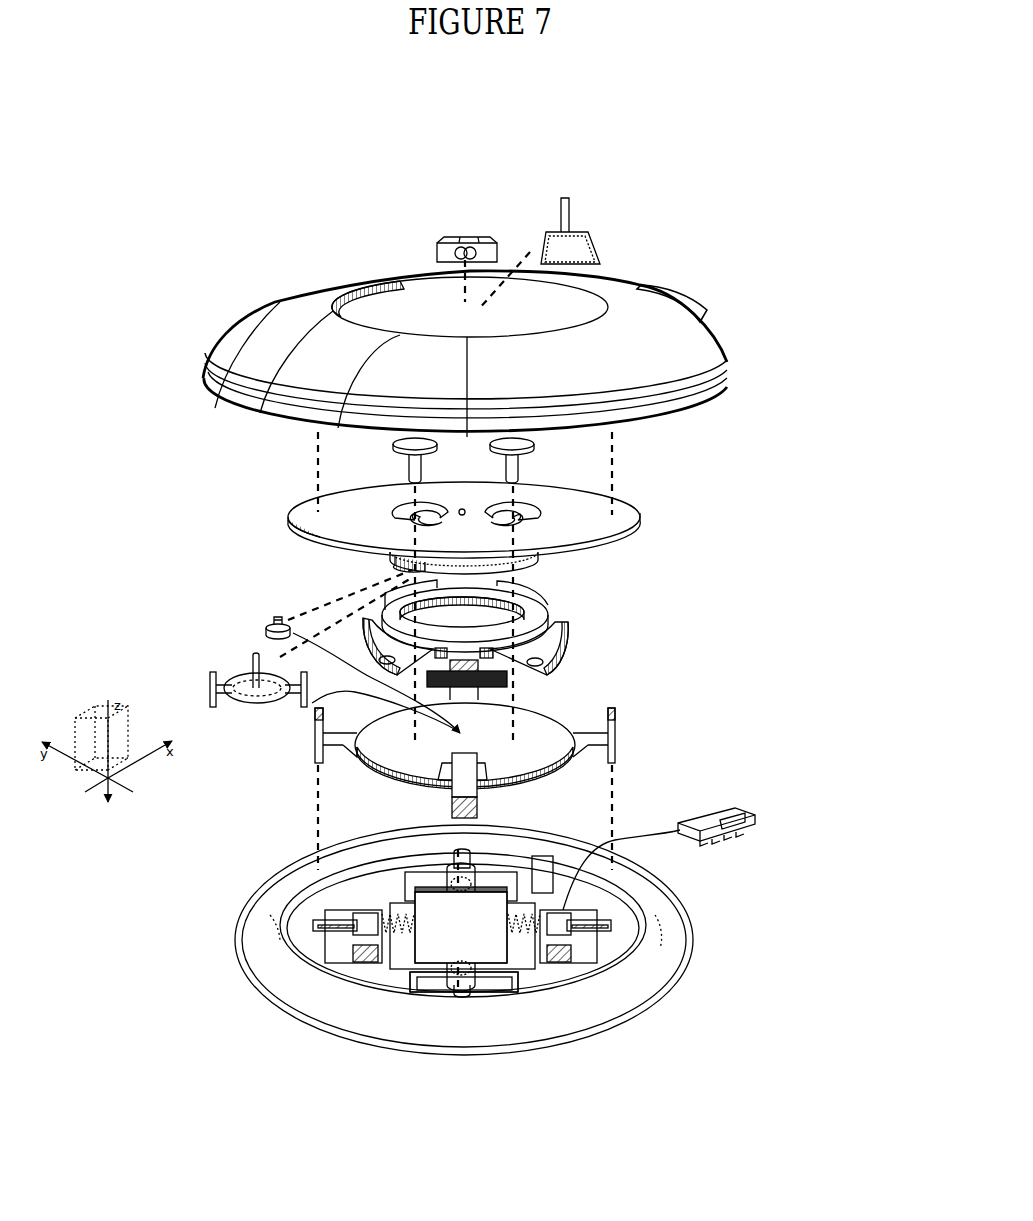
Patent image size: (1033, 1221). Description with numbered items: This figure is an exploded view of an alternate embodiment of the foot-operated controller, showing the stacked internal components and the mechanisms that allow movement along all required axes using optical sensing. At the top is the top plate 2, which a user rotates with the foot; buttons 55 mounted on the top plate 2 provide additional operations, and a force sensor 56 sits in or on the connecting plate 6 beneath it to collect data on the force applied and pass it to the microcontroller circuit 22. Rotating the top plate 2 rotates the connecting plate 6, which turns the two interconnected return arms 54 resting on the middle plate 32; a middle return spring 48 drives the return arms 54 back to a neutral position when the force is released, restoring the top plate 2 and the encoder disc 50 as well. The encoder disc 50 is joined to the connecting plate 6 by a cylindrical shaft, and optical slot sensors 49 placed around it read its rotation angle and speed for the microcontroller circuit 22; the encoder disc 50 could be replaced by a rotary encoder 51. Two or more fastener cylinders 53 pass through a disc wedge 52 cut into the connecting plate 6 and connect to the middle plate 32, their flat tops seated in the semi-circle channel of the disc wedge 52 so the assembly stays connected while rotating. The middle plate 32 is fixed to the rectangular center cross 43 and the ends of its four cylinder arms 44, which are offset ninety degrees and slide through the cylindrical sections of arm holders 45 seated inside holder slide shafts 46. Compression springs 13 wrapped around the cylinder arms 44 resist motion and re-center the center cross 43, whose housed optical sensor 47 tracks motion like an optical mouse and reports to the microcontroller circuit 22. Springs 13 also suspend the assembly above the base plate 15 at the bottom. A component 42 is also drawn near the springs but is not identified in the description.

The top plate 2 is at (340, 346).
The connecting plate 6 is at (626, 534).
The springs 13 is at (529, 939).
The base plate 15 is at (252, 965).
The microcontroller circuit 22 is at (551, 861).
The middle plate 32 is at (550, 745).
The springs 42 is at (524, 962).
The center cross 43 is at (433, 920).
The cylinder arms 44 is at (312, 921).
The arm holder 45 is at (346, 933).
The holder slide shaft 46 is at (418, 987).
The optical sensor 47 is at (758, 831).
The middle return spring 48 is at (511, 689).
The optical slot sensor 49 is at (207, 681).
The encoder disc 50 is at (243, 666).
The rotary encoder 51 is at (265, 616).
The disc wedge 52 is at (528, 521).
The fastener cylinders 53 is at (530, 462).
The return arms 54 is at (573, 641).
The buttons 55 is at (690, 296).
The force sensor 56 is at (497, 229).